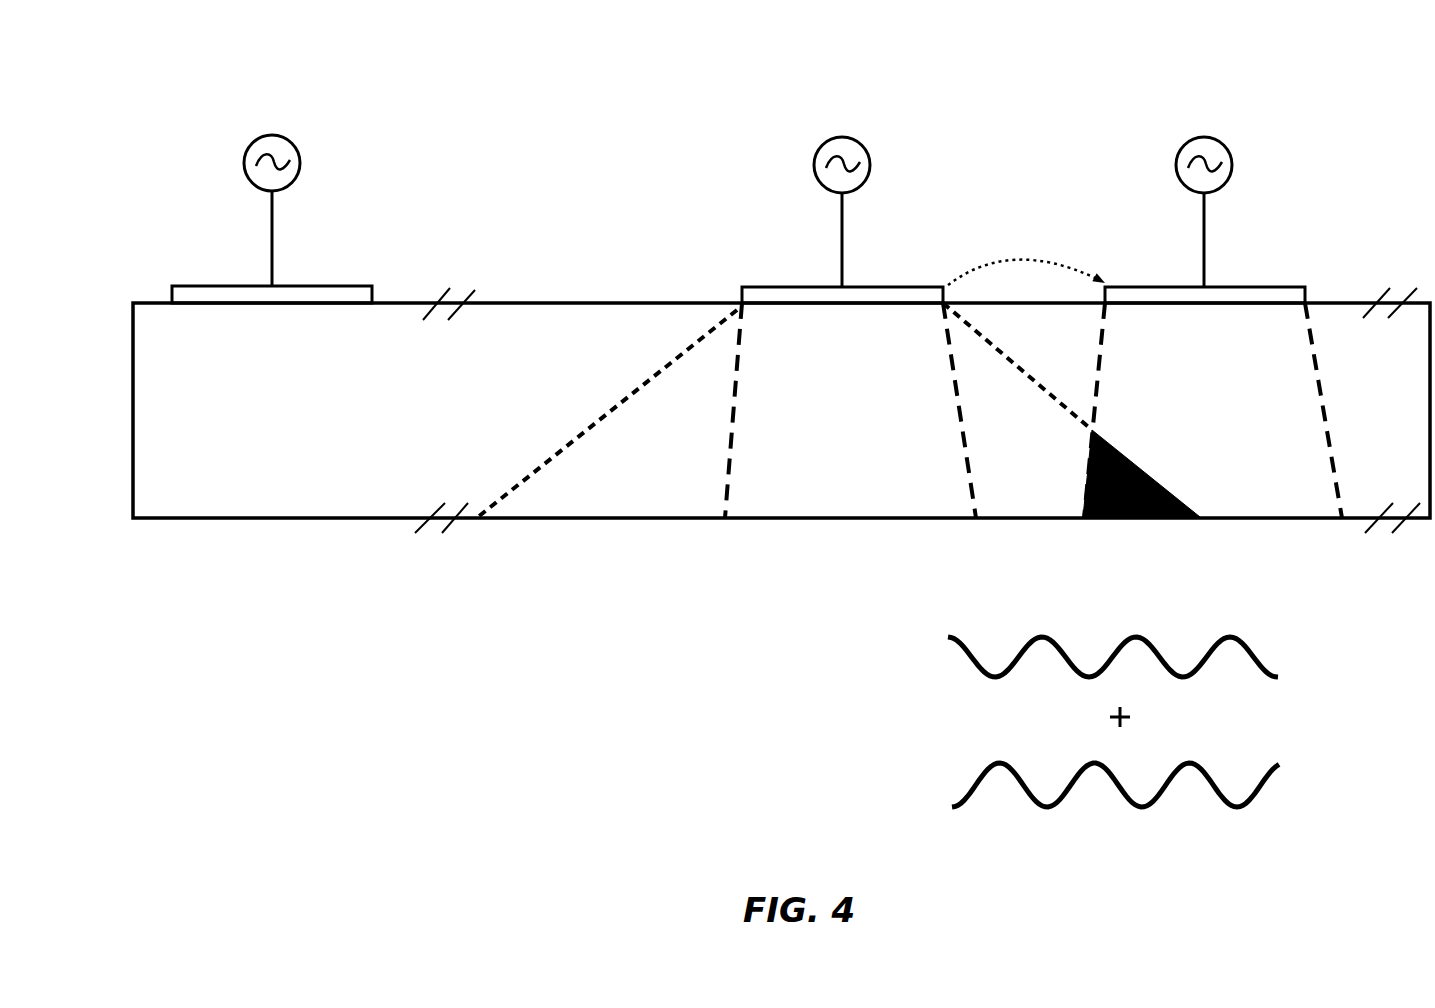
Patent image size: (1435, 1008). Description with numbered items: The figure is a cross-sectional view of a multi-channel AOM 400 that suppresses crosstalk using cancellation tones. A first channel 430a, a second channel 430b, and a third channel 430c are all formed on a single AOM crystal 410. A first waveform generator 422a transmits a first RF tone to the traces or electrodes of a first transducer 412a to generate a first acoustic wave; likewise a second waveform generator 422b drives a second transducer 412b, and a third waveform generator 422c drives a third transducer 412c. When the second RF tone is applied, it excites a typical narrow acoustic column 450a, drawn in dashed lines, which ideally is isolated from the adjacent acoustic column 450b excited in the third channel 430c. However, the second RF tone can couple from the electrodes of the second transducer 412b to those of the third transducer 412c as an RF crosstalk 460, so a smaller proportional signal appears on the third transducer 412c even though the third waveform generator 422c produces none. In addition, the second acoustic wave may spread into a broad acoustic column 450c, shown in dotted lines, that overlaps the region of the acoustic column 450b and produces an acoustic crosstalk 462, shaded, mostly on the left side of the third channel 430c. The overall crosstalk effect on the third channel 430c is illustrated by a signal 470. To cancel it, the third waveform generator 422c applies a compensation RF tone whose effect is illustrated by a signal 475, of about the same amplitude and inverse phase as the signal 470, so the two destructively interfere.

The AOM 400 is at (230, 45).
The AOM crystal 410 is at (305, 421).
The first transducer 412a is at (308, 283).
The second transducer 412b is at (880, 285).
The third transducer 412c is at (1243, 285).
The first waveform generator 422a is at (297, 150).
The second waveform generator 422b is at (865, 152).
The third waveform generator 422c is at (1227, 150).
The first channel 430a is at (190, 236).
The second channel 430b is at (758, 232).
The third channel 430c is at (1113, 232).
The acoustic column 450a is at (737, 388).
The adjacent acoustic column 450b is at (1313, 370).
The broad acoustic column 450c is at (1048, 390).
The RF crosstalk 460 is at (1025, 262).
The acoustic crosstalk 462 is at (1113, 522).
The signal 470 is at (944, 768).
The signal 475 is at (1181, 619).